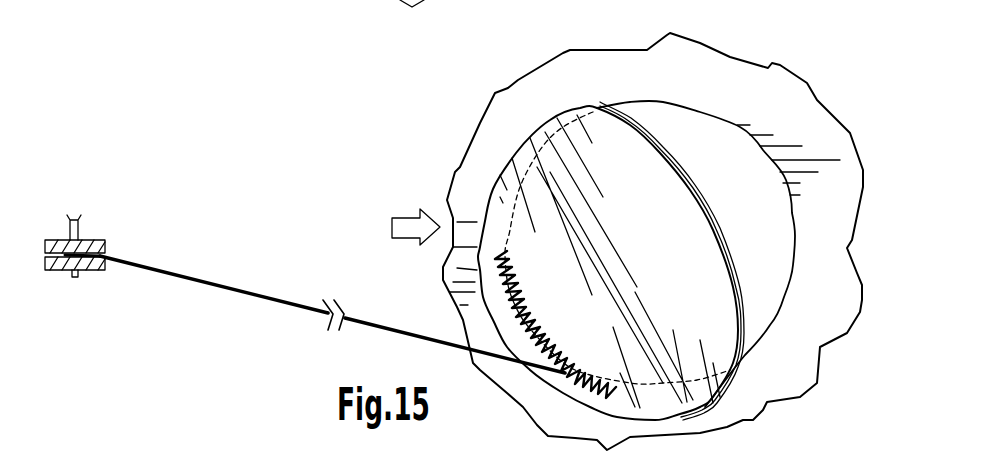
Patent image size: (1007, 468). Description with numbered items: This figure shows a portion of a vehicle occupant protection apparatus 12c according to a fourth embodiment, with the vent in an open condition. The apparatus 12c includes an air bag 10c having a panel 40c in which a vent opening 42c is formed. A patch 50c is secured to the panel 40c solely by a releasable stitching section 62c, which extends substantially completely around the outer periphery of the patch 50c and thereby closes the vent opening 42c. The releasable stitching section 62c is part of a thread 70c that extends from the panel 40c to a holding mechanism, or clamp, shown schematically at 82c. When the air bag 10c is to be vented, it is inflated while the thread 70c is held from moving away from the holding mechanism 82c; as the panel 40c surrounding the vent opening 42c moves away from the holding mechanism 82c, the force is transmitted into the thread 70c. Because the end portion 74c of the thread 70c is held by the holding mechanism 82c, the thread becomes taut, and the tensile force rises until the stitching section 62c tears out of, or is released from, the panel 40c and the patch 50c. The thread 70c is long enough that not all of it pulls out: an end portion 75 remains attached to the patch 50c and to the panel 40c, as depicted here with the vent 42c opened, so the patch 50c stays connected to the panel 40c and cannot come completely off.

The air bag 10c is at (770, 65).
The vehicle occupant protection apparatus 12c is at (181, 349).
The panel 40c is at (807, 127).
The vent opening 42c is at (755, 238).
The patch 50c is at (662, 152).
The releasable stitching section 62c is at (398, 330).
The thread 70c is at (213, 281).
The end portion of the thread 74c is at (82, 258).
The end portion of the thread 75 is at (567, 388).
The holding mechanism 82c is at (100, 240).